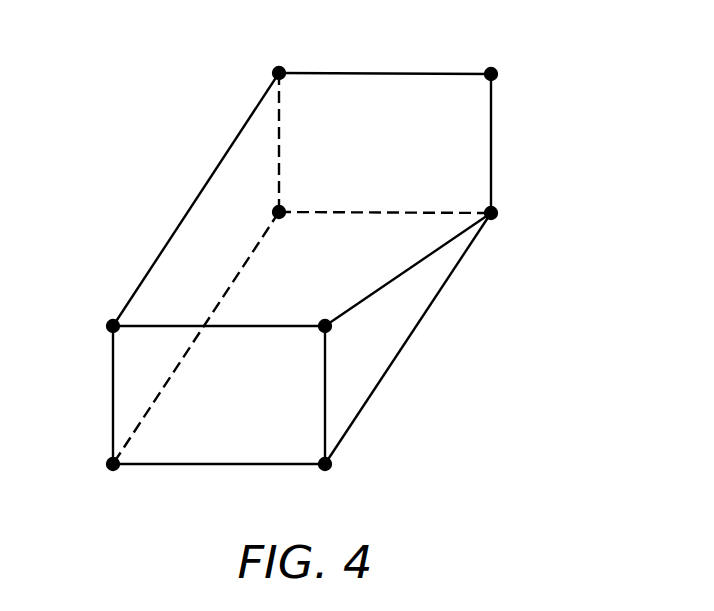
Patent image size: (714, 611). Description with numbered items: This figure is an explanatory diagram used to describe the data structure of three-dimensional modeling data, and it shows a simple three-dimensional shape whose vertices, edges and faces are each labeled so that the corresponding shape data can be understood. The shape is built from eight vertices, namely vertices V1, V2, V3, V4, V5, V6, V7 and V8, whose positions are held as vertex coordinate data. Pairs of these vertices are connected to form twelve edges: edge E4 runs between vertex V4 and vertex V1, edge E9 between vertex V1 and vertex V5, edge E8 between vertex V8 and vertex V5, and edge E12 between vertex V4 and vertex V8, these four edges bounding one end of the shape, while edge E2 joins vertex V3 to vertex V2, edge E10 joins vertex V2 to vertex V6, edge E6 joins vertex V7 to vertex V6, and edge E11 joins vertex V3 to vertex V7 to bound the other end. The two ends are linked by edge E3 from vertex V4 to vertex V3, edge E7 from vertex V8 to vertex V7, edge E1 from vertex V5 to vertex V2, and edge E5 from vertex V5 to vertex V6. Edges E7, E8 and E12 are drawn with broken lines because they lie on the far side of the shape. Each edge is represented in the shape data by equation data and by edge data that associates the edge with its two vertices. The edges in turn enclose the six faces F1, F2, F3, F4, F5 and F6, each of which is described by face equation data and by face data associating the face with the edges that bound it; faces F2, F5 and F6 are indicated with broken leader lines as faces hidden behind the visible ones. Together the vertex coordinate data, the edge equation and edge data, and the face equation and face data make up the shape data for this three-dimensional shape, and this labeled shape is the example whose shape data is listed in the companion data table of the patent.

The face F1 is at (323, 92).
The face F2 is at (248, 428).
The face F3 is at (440, 255).
The face F4 is at (172, 447).
The face F5 is at (214, 236).
The face F6 is at (426, 135).
The edge E1 is at (366, 267).
The edge E2 is at (238, 328).
The edge E3 is at (214, 237).
The edge E4 is at (360, 73).
The edge E5 is at (429, 313).
The edge E6 is at (195, 465).
The edge E7 is at (207, 309).
The edge E8 is at (343, 212).
The edge E9 is at (491, 152).
The edge E10 is at (325, 394).
The edge E11 is at (113, 394).
The edge E12 is at (279, 144).
The vertex V1 is at (497, 71).
The vertex V2 is at (322, 321).
The vertex V3 is at (110, 321).
The vertex V4 is at (276, 69).
The vertex V5 is at (497, 209).
The vertex V6 is at (329, 470).
The vertex V7 is at (109, 470).
The vertex V8 is at (276, 207).